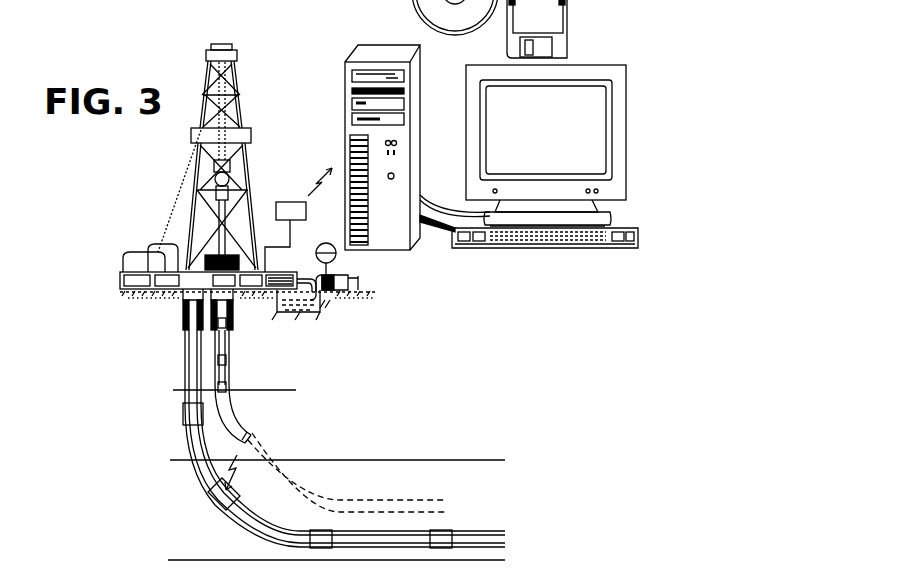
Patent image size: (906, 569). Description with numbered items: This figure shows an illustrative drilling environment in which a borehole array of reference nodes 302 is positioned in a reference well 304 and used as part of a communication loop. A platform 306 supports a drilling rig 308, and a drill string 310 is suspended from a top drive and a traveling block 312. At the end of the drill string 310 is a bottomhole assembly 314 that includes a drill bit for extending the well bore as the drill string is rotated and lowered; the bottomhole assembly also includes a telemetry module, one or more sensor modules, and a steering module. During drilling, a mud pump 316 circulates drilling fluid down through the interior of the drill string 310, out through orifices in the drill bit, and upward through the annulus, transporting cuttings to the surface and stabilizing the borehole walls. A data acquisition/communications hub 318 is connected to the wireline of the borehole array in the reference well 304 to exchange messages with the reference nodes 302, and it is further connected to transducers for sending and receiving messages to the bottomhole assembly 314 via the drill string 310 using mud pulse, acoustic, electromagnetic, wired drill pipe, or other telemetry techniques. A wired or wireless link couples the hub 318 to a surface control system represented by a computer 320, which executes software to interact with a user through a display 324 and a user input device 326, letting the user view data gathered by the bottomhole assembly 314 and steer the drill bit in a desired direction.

The reference nodes 302 is at (222, 503).
The reference well 304 is at (183, 305).
The platform 306 is at (120, 282).
The drilling rig 308 is at (233, 53).
The drill string 310 is at (228, 380).
The traveling block 312 is at (232, 178).
The bottomhole assembly 314 is at (243, 442).
The mud pump 316 is at (330, 300).
The data acquisition/communications hub 318 is at (287, 200).
The computer 320 is at (421, 180).
The display 324 is at (600, 196).
The user input device 326 is at (607, 243).